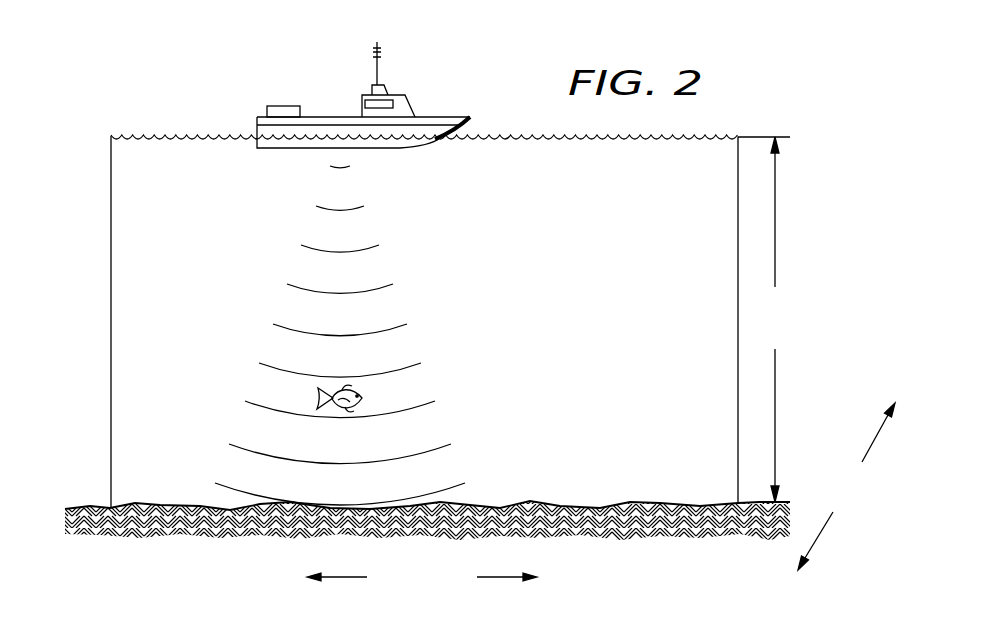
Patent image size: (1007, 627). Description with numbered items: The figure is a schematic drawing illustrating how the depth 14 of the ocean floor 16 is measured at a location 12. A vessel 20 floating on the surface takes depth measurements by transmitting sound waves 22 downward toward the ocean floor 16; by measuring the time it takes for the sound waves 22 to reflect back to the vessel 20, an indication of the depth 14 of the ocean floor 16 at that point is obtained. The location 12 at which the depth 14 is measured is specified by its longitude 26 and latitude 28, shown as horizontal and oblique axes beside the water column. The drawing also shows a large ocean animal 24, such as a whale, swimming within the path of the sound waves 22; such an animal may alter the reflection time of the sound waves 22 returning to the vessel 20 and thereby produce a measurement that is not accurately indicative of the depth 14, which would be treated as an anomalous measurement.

The location 12 is at (240, 542).
The depth 14 is at (775, 319).
The ocean floor 16 is at (87, 507).
The vessel 20 is at (328, 115).
The sound waves 22 is at (418, 298).
The large ocean animal 24 is at (363, 400).
The longitude 26 is at (422, 590).
The latitude 28 is at (846, 486).